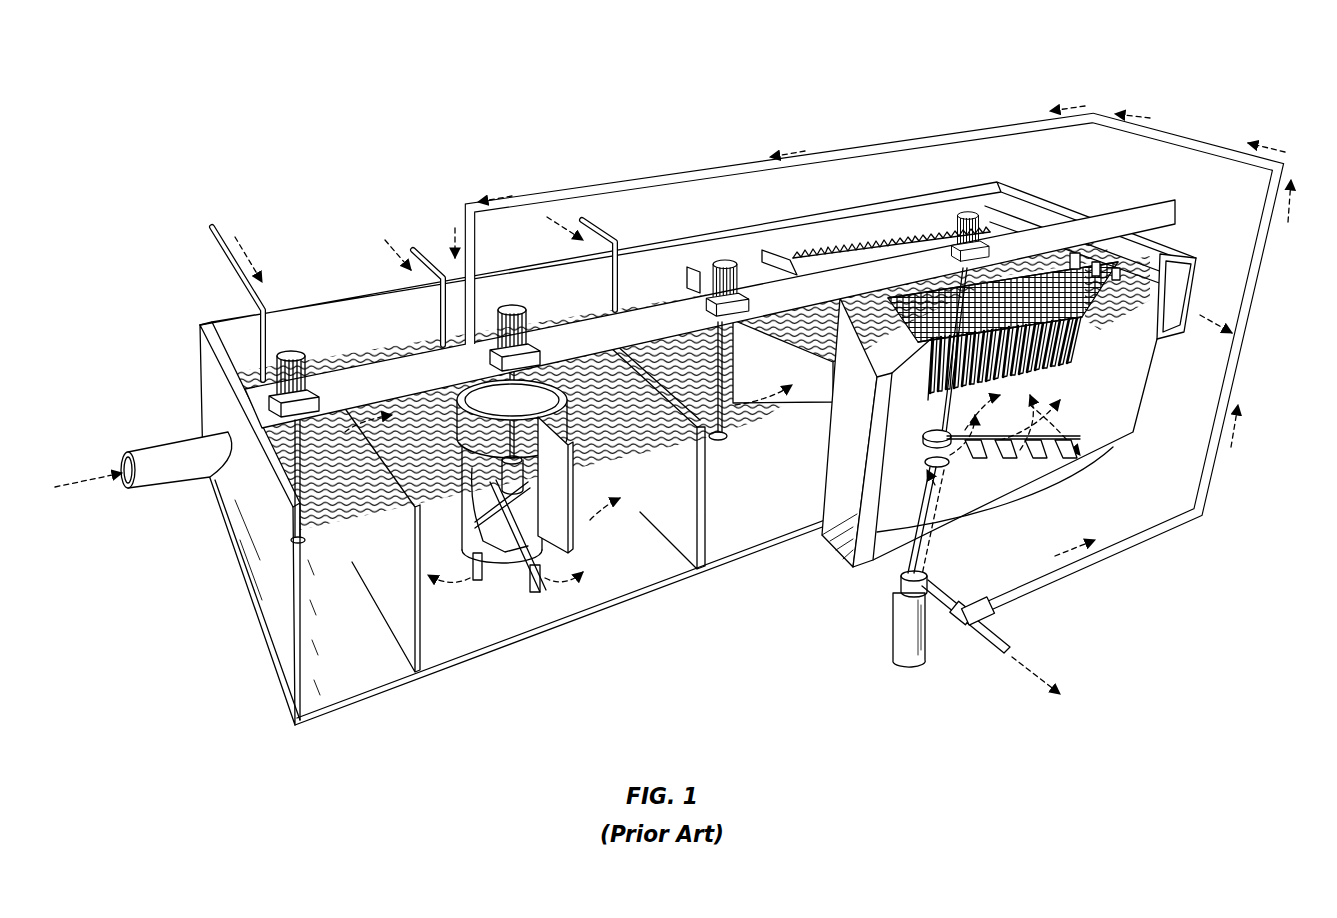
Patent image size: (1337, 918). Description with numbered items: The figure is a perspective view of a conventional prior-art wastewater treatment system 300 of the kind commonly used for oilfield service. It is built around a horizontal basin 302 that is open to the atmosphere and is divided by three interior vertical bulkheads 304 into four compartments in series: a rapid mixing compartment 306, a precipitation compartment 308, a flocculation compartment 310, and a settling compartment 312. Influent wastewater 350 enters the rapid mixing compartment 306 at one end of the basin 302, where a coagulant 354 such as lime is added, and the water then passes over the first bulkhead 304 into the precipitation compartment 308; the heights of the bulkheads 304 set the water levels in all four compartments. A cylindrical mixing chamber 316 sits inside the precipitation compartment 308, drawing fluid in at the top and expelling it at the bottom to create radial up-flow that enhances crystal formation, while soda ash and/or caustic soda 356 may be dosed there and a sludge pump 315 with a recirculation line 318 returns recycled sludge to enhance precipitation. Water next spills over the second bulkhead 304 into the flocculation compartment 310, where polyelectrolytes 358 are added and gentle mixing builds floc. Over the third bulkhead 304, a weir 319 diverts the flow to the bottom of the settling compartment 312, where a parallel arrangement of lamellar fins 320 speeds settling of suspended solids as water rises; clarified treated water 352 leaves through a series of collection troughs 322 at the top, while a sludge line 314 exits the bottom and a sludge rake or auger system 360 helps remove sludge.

The wastewater treatment system 300 is at (243, 88).
The horizontal basin 302 is at (502, 655).
The interior vertical bulkheads 304 is at (418, 655).
The rapid mixing compartment 306 is at (322, 688).
The precipitation compartment 308 is at (593, 597).
The flocculation compartment 310 is at (773, 517).
The settling compartment 312 is at (1110, 415).
The sludge line 314 is at (987, 655).
The sludge pump 315 is at (893, 640).
The cylindrical mixing chamber 316 is at (500, 383).
The recirculation line 318 is at (892, 140).
The weir 319 is at (778, 252).
The lamellar fins 320 is at (1085, 340).
The collection troughs 322 is at (1116, 268).
The influent wastewater 350 is at (124, 478).
The treated water 352 is at (1177, 287).
The coagulant 354 is at (212, 225).
The soda ash and/or caustic soda 356 is at (413, 247).
The polyelectrolytes 358 is at (593, 217).
The sludge rake or auger system 360 is at (1045, 460).